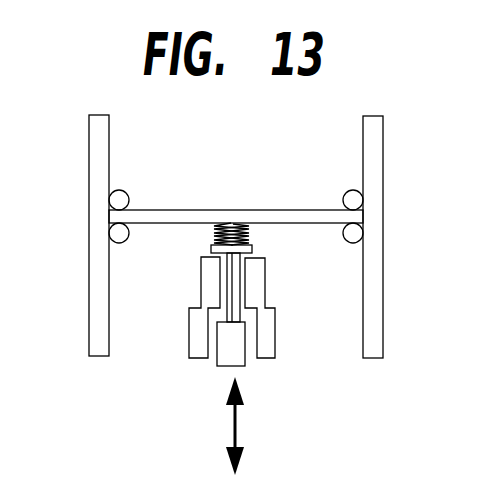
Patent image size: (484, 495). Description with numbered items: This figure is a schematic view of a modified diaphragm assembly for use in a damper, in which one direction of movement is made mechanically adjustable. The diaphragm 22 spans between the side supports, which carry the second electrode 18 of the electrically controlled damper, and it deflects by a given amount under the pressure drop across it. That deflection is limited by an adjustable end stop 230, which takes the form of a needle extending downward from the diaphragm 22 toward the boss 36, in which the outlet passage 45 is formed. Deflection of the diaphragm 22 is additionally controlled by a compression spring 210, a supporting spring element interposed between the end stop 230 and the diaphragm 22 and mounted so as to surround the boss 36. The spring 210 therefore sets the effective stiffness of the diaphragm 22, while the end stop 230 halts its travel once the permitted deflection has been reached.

The second electrode 18 is at (109, 139).
The diaphragm 22 is at (148, 217).
The compression spring 210 is at (233, 207).
The adjustable end stop 230 is at (242, 270).
The outlet passage 45 is at (223, 286).
The boss 36 is at (254, 293).